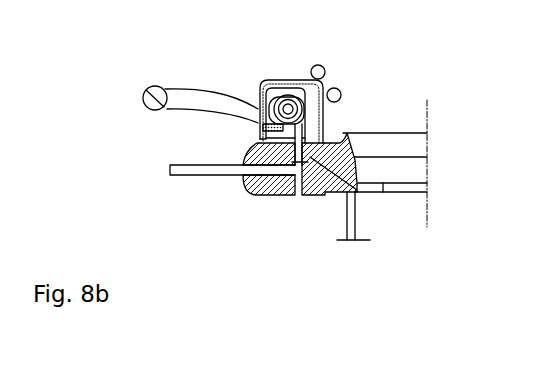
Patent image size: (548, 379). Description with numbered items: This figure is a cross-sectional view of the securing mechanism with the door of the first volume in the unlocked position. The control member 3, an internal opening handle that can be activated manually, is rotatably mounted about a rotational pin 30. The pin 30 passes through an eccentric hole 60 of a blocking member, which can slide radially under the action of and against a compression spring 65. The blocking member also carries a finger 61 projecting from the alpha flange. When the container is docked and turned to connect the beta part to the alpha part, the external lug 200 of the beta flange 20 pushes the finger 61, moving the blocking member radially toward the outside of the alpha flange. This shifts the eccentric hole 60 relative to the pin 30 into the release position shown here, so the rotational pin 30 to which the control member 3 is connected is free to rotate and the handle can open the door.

The control member 3 is at (128, 98).
The eccentric hole 60 is at (268, 110).
The rotational pin 30 is at (287, 89).
The compression spring 65 is at (254, 131).
The finger 61 is at (302, 173).
The external lug 200 is at (320, 176).
The beta flange 20 is at (362, 193).